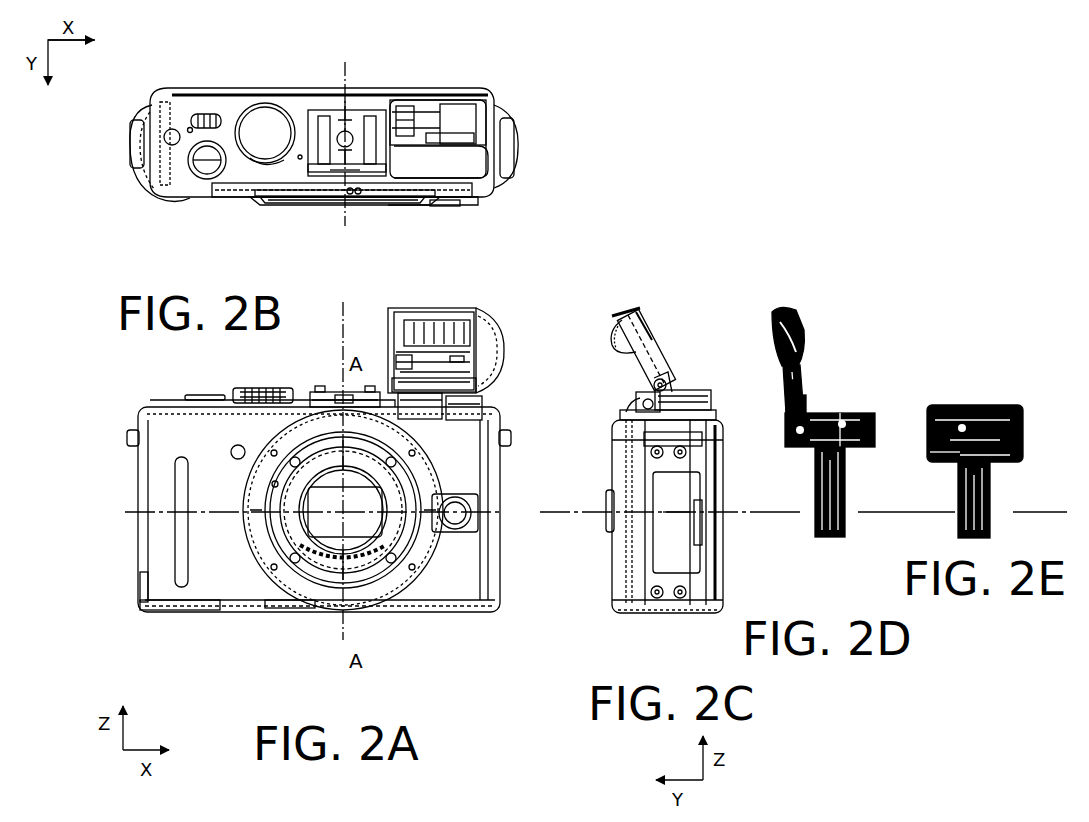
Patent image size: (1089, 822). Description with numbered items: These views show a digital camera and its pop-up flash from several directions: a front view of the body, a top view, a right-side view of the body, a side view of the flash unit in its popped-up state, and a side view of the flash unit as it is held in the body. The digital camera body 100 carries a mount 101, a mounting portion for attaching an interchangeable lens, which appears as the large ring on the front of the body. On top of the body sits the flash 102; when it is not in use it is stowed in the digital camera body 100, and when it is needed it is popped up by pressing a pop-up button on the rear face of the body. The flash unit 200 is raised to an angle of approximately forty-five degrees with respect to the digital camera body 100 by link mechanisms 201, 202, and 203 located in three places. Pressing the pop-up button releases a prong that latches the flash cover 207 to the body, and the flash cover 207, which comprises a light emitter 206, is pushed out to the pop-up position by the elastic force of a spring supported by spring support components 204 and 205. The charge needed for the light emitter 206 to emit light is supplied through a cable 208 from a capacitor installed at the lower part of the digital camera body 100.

In FIG. 2B, the digital camera body 100 is at (128, 204).
In FIG. 2A, the digital camera body 100 is at (118, 612).
In FIG. 2C, the digital camera body 100 is at (596, 615).
In FIG. 2B, the mount 101 is at (268, 203).
In FIG. 2A, the mount 101 is at (272, 572).
In FIG. 2B, the flash 102 is at (458, 160).
In FIG. 2A, the flash 102 is at (443, 310).
In FIG. 2C, the flash 102 is at (626, 310).
In FIG. 2D, the flash unit 200 is at (807, 300).
In FIG. 2E, the flash unit 200 is at (998, 300).
In FIG. 2A, the link mechanism 201 is at (470, 415).
In FIG. 2D, the link mechanism 201 is at (788, 404).
In FIG. 2C, the link mechanism 202 is at (634, 398).
In FIG. 2C, the link mechanism 203 is at (668, 396).
In FIG. 2D, the spring support component 204 is at (792, 462).
In FIG. 2D, the spring support component 205 is at (832, 378).
In FIG. 2C, the light emitter 206 is at (620, 326).
In FIG. 2C, the flash cover 207 is at (642, 318).
In FIG. 2E, the cable 208 is at (946, 462).